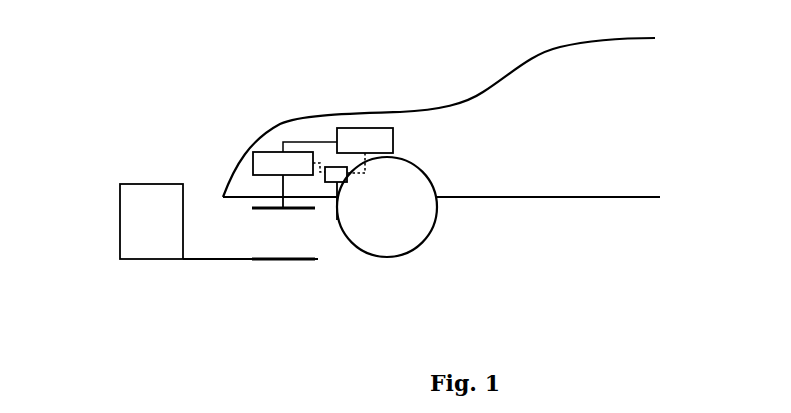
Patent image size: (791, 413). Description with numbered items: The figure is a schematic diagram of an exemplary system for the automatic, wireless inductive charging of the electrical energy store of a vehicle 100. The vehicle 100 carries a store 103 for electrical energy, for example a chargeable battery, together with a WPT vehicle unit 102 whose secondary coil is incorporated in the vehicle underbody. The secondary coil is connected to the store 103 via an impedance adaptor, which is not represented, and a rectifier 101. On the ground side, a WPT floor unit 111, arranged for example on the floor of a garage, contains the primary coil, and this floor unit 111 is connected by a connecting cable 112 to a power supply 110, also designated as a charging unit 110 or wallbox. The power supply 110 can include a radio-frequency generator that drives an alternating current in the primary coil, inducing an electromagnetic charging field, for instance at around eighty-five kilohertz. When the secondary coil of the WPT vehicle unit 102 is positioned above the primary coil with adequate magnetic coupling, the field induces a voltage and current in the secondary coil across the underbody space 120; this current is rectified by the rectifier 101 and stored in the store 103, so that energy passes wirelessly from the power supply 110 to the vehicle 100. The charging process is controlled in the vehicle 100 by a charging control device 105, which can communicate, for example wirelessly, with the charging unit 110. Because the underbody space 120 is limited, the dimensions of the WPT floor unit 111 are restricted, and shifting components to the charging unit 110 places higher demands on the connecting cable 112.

The vehicle 100 is at (491, 65).
The rectifier 101 is at (264, 159).
The WPT vehicle unit 102 is at (295, 209).
The store for electrical energy 103 is at (353, 136).
The charging control device 105 is at (330, 167).
The power supply 110 is at (131, 221).
The WPT floor unit 111 is at (317, 260).
The connecting cable 112 is at (213, 261).
The underbody space 120 is at (265, 231).